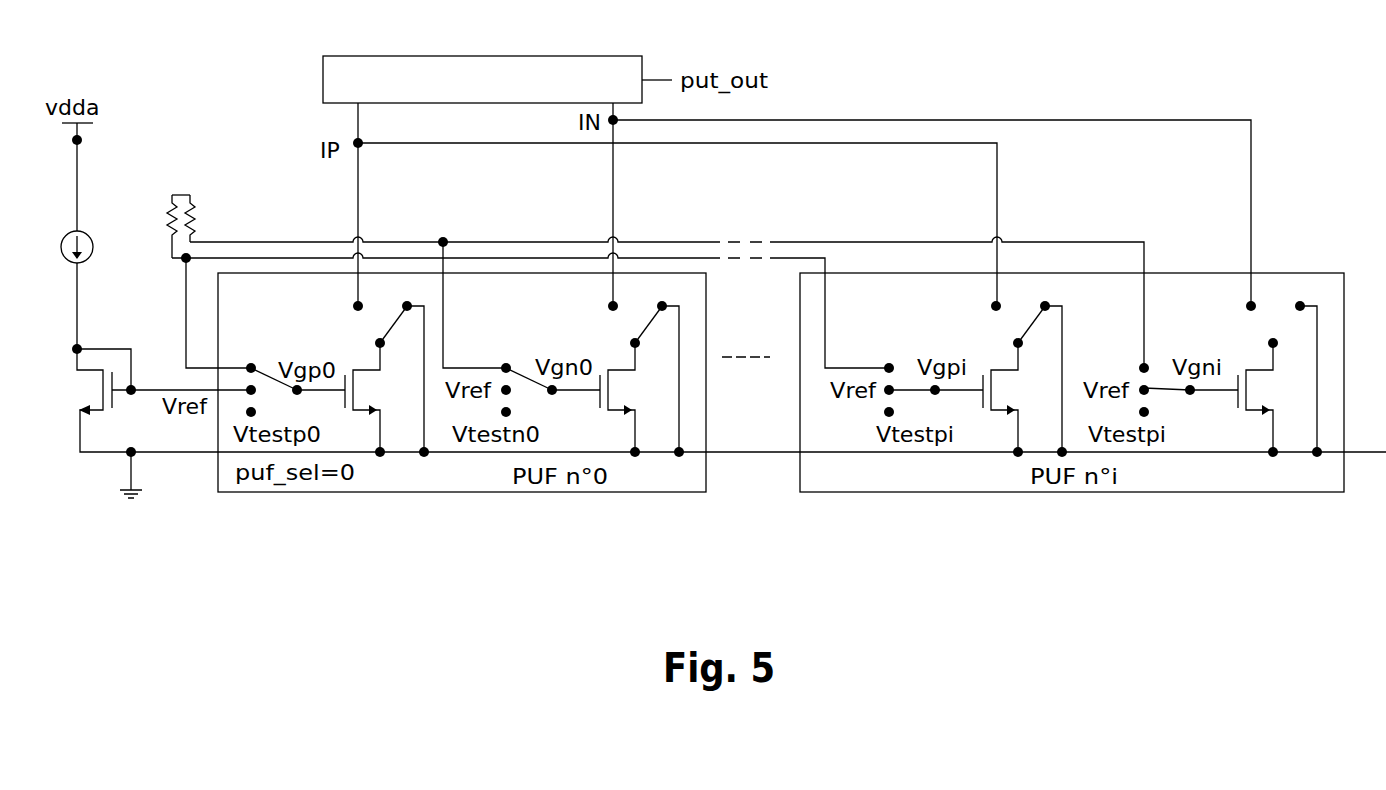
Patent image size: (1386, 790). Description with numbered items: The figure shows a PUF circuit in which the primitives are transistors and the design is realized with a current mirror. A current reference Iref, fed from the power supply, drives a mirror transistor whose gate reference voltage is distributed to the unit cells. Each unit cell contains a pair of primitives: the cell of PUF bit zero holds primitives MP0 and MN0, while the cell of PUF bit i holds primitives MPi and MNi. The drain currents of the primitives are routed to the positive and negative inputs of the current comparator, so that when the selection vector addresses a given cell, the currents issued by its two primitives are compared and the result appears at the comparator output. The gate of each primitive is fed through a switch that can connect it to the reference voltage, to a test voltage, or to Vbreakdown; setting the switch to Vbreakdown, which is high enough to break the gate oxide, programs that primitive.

The PUF cell primitive MP0 is at (337, 379).
The PUF cell primitive MN0 is at (592, 379).
The PUF cell primitive MPi is at (975, 379).
The PUF cell primitive MNi is at (1230, 379).
The current reference Iref is at (53, 247).
The breakdown voltage Vbreakdown is at (180, 213).
The current comparator is at (482, 79).